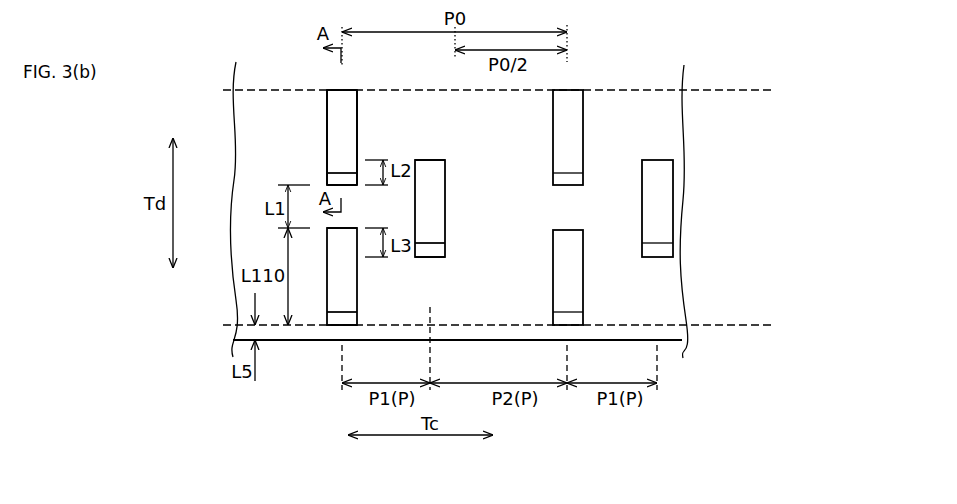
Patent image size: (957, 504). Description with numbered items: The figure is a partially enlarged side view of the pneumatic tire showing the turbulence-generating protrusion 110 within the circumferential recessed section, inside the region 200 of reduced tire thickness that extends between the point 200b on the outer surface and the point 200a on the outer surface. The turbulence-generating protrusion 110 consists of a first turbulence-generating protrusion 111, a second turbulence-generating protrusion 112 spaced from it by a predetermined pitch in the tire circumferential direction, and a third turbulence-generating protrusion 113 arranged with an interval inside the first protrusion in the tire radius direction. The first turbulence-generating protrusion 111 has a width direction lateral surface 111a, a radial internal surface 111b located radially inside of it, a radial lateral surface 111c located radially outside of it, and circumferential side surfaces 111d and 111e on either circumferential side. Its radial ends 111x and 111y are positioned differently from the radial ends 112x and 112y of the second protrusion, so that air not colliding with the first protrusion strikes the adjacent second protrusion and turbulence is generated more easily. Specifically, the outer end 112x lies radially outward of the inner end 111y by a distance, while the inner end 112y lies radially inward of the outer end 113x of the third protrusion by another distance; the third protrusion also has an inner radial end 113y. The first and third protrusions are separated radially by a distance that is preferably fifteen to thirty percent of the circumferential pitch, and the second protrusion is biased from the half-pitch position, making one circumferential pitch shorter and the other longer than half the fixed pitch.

The turbulence-generating protrusion 110 is at (613, 207).
The first turbulence-generating protrusion 111 is at (351, 147).
The width direction lateral surface 111a is at (358, 121).
The radial internal surface 111b is at (327, 182).
The radial lateral surface 111c is at (345, 89).
The circumferential side surface 111d is at (327, 127).
The circumferential side surface 111e is at (358, 102).
The end of first turbulence-generating protrusion 111x is at (357, 86).
The end of first turbulence-generating protrusion 111y is at (351, 190).
The second turbulence-generating protrusion 112 is at (434, 203).
The end of second turbulence-generating protrusion 112x is at (436, 158).
The end of second turbulence-generating protrusion 112y is at (437, 260).
The third turbulence-generating protrusion 113 is at (350, 295).
The end of third turbulence-generating protrusion 113x is at (346, 233).
The end of third turbulence-generating protrusion 113y is at (349, 329).
The region 200 is at (749, 90).
The point on tire outer surface 200a is at (527, 327).
The point on tire outer surface 200b is at (527, 92).